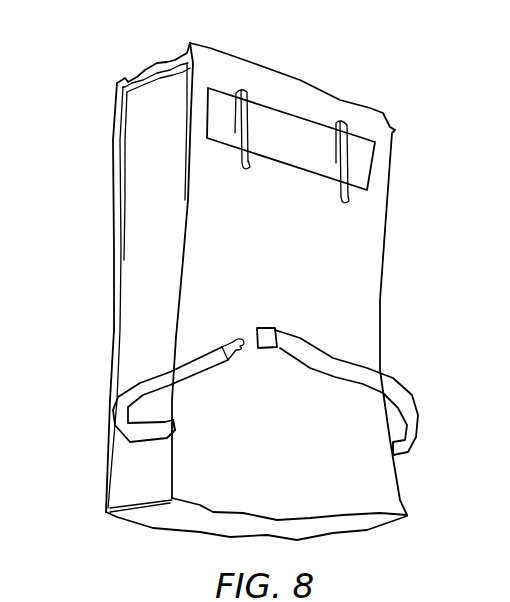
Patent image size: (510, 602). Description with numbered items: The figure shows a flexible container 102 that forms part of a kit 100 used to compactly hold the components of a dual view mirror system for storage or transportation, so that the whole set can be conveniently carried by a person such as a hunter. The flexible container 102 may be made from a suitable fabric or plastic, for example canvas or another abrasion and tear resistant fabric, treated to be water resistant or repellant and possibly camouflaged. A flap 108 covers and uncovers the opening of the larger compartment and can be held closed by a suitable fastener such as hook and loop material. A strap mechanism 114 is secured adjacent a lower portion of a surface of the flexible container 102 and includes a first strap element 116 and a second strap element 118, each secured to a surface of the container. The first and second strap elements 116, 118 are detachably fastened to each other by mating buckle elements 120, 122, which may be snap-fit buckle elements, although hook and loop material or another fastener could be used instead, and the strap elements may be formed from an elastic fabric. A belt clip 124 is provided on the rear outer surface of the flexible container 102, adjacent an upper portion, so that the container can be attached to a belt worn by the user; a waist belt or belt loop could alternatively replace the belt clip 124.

The kit 100 is at (52, 487).
The flexible container 102 is at (115, 277).
The flap 108 is at (115, 122).
The strap mechanism 114 is at (250, 379).
The first strap element 116 is at (418, 437).
The second strap element 118 is at (115, 410).
The buckle element 120 is at (270, 328).
The buckle element 122 is at (240, 338).
The belt clip 124 is at (298, 110).